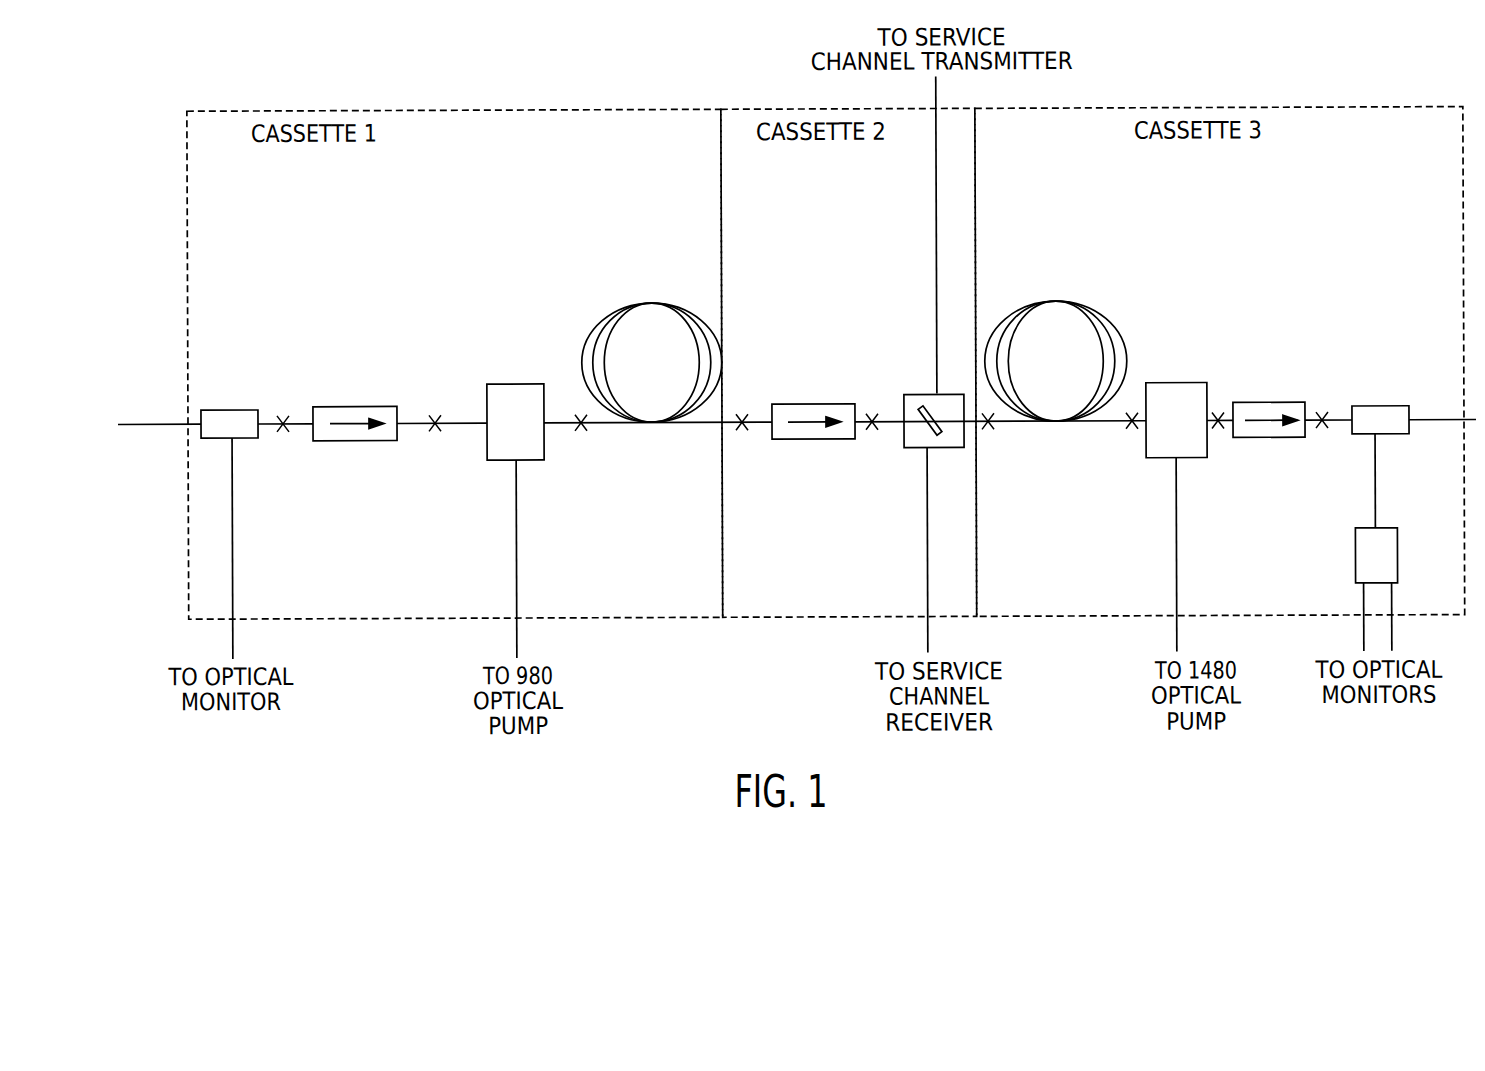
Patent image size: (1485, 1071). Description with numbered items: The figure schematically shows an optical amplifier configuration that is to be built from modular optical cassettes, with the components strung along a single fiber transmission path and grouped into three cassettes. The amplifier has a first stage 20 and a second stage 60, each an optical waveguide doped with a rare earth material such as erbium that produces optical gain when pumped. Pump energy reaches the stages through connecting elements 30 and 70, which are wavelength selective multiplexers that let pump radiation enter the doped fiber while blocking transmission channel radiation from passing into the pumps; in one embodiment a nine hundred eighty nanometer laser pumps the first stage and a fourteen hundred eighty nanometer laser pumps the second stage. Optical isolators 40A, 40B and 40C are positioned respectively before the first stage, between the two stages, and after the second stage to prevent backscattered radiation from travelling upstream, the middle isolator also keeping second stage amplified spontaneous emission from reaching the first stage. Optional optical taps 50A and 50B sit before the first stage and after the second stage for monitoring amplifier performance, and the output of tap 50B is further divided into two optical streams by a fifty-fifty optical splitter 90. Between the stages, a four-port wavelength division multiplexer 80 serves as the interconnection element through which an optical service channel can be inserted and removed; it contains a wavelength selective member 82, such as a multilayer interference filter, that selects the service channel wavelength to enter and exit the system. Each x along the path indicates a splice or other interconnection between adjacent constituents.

The first stage 20 is at (651, 303).
The connecting element 30 is at (507, 384).
The optical isolator 40A is at (345, 410).
The optical isolator 40B is at (800, 410).
The optical isolator 40C is at (1258, 407).
The optical tap 50A is at (228, 410).
The optical tap 50B is at (1378, 406).
The second stage 60 is at (1053, 302).
The connecting element 70 is at (1175, 384).
The four-port wavelength division multiplexer 80 is at (945, 397).
The wavelength selective member 82 is at (935, 433).
The 50:50 optical splitter 90 is at (1385, 530).